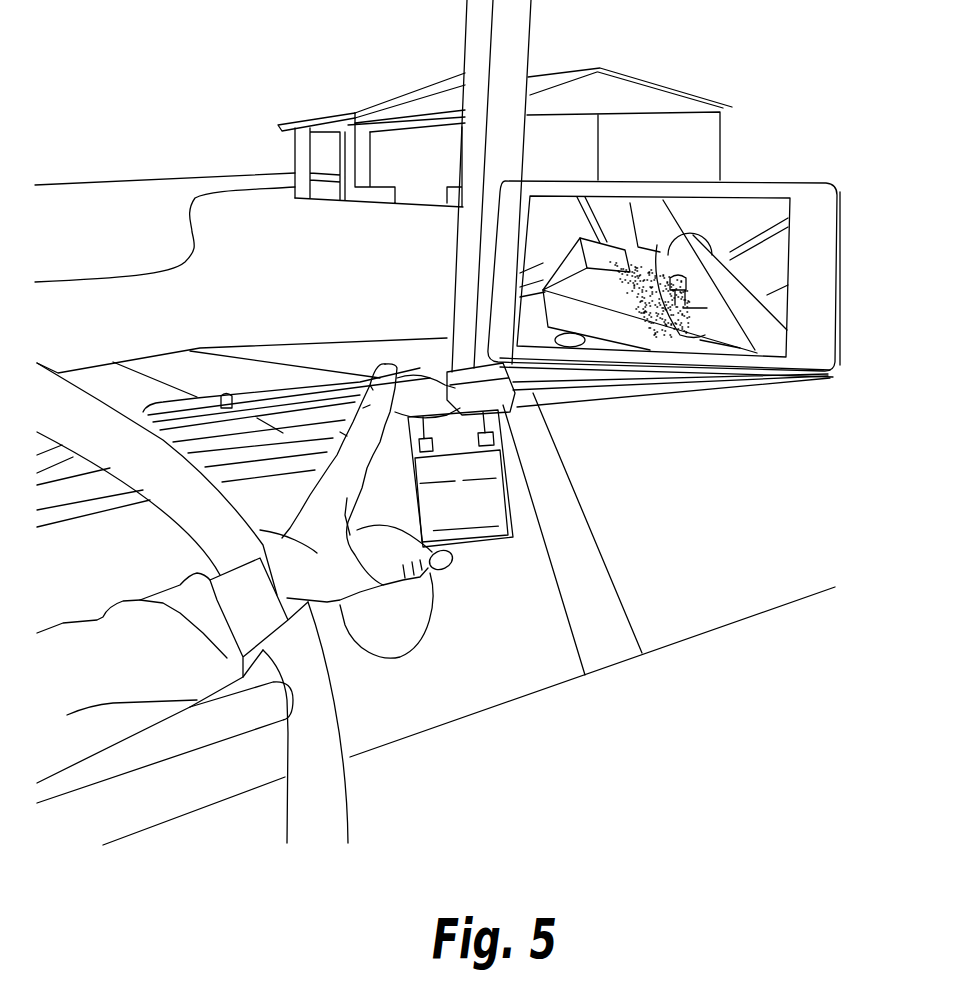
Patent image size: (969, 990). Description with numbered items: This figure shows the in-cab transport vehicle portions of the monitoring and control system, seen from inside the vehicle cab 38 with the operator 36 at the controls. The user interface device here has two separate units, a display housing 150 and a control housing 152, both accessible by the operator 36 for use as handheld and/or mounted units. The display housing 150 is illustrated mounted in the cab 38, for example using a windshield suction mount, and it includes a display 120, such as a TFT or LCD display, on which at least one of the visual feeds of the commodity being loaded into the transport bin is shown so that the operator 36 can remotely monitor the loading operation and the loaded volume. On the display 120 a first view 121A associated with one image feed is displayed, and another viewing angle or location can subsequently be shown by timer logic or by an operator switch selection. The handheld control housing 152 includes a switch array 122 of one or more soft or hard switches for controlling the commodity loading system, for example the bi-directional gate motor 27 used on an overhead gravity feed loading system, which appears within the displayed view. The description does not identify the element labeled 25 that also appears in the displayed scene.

The vehicle cab 38 is at (268, 323).
The operator 36 is at (70, 618).
The display 120 is at (520, 316).
The first view 121A is at (737, 215).
The bin 25 is at (625, 250).
The bi-directional gate motor 27 is at (686, 345).
The display housing 150 is at (801, 378).
The switch array 122 is at (520, 445).
The control housing 152 is at (512, 506).